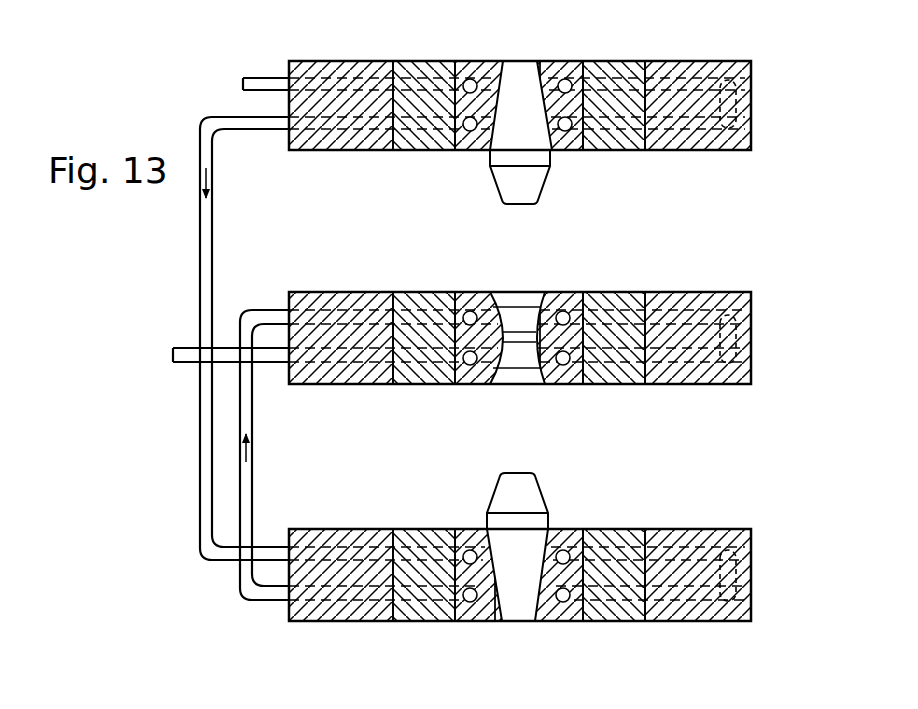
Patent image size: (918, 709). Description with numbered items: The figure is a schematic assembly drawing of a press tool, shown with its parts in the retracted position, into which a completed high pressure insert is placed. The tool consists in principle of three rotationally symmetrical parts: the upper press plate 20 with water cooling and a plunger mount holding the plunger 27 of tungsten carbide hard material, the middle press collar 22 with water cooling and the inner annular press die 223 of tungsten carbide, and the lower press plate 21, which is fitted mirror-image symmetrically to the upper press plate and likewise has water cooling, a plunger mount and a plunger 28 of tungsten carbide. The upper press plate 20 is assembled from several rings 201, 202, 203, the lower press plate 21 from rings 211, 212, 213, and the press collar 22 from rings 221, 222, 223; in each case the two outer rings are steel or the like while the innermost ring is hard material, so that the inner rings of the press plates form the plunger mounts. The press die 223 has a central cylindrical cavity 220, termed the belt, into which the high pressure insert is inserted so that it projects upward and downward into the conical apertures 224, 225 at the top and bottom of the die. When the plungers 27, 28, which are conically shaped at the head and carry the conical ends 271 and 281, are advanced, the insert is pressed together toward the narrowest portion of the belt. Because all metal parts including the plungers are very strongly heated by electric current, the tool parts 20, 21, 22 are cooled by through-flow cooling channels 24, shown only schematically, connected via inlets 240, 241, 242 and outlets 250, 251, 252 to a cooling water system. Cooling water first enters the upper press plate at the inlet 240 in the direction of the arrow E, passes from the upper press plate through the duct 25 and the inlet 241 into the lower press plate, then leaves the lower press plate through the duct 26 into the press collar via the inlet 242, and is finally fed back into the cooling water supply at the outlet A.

The upper press plate 20 is at (554, 106).
The lower press plate 21 is at (553, 527).
The middle press collar 22 is at (554, 333).
The through-flow cooling channels 24 is at (687, 76).
The duct 25 is at (218, 338).
The duct 26 is at (213, 457).
The plunger 27 is at (556, 106).
The plunger 28 is at (555, 527).
The ring 201 is at (327, 62).
The ring 202 is at (424, 62).
The ring 203 is at (568, 66).
The ring 211 is at (360, 530).
The ring 212 is at (426, 530).
The ring 213 is at (476, 530).
The cylindrical cavity 220 is at (516, 333).
The ring 221 is at (333, 293).
The ring 222 is at (418, 293).
The press die 223 is at (571, 293).
The conical aperture 224 is at (510, 300).
The conical aperture 225 is at (517, 369).
The inlet 240 is at (287, 80).
The inlet 241 is at (284, 552).
The inlet 242 is at (284, 311).
The outlet 250 is at (284, 128).
The outlet 251 is at (284, 601).
The outlet 252 is at (284, 363).
The conical end 271 is at (540, 182).
The conical end 281 is at (542, 498).
The arrow E is at (236, 59).
The outlet A is at (214, 386).